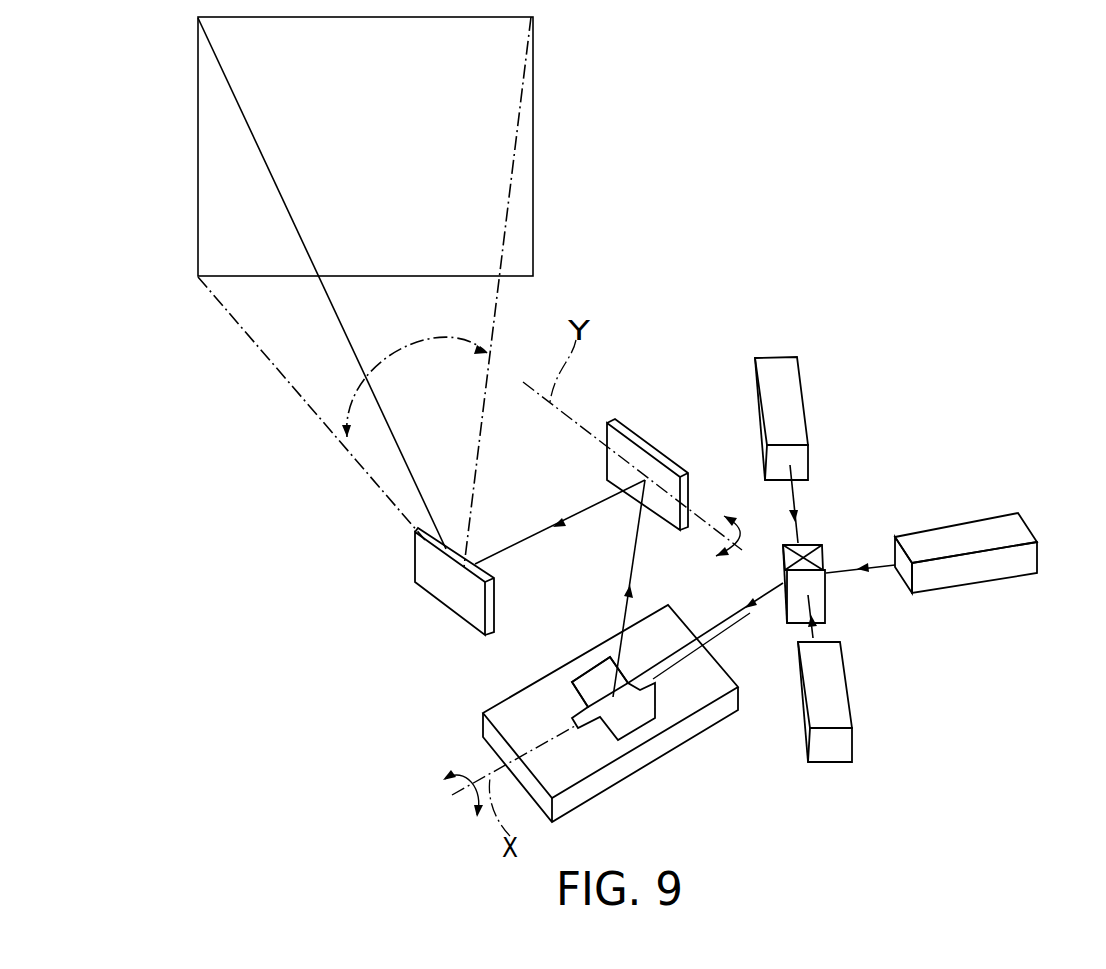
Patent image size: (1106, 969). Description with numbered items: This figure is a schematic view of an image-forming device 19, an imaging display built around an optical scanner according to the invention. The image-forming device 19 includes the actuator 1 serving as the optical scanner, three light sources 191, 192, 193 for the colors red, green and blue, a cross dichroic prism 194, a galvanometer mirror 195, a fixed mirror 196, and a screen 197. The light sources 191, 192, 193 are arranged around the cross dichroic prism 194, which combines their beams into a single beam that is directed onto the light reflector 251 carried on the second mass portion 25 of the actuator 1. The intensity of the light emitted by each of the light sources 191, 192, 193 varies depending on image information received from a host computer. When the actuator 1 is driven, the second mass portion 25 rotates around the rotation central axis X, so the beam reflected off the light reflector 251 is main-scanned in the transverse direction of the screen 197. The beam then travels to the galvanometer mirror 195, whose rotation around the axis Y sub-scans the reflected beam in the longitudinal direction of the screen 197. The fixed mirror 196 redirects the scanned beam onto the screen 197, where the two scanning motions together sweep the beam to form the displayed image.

The actuator 1 is at (610, 731).
The second mass portion 25 is at (605, 733).
The light reflector 251 is at (593, 680).
The image-forming device 19 is at (912, 260).
The light source 191 is at (790, 392).
The light source 192 is at (985, 533).
The light source 193 is at (832, 690).
The cross dichroic prism 194 is at (822, 557).
The galvanometer mirror 195 is at (637, 433).
The fixed mirror 196 is at (437, 583).
The screen 197 is at (533, 130).